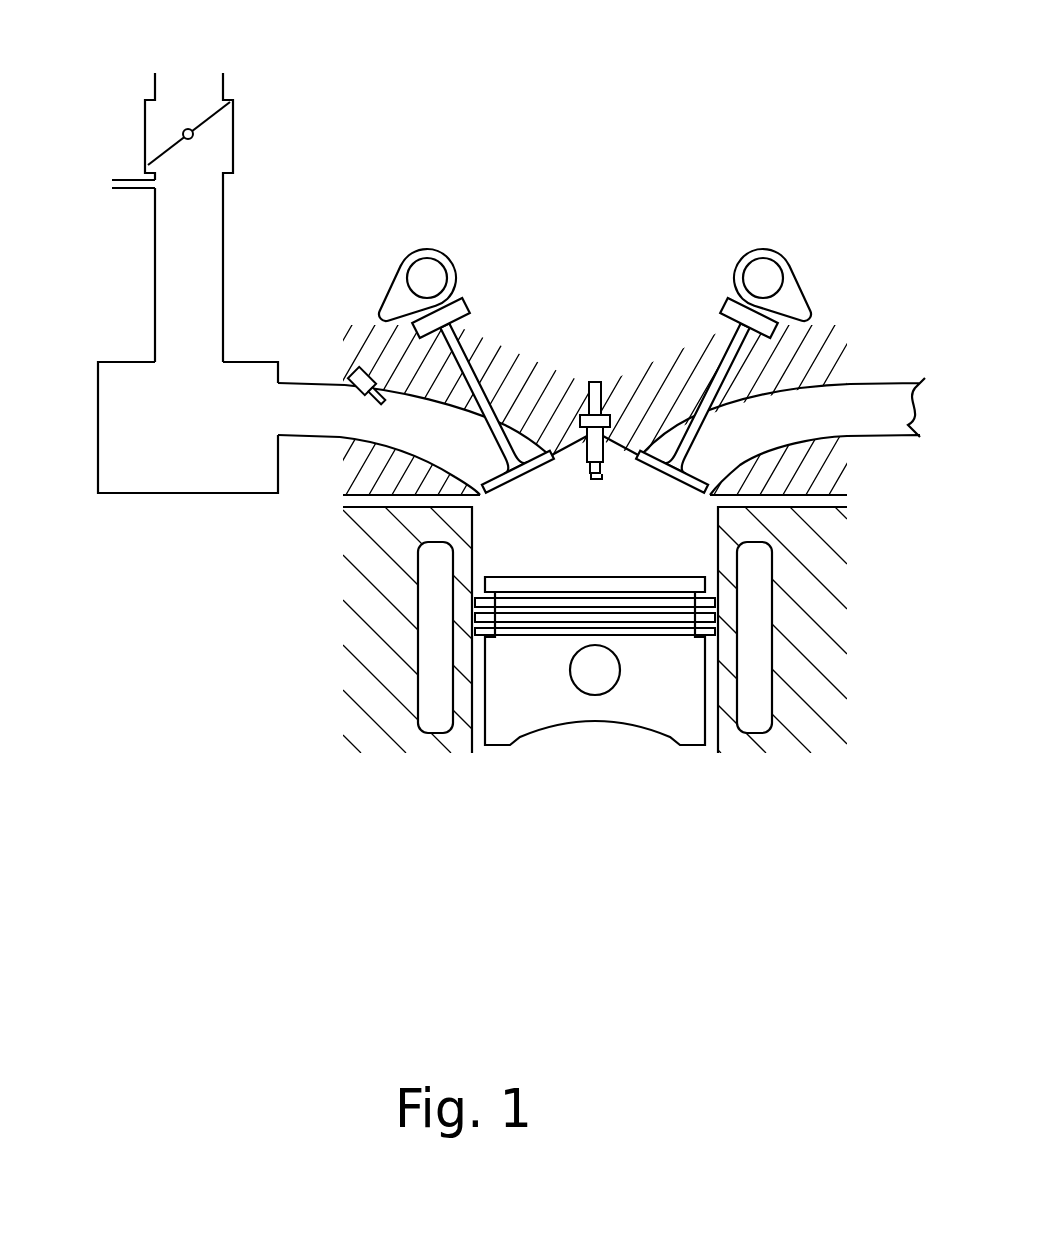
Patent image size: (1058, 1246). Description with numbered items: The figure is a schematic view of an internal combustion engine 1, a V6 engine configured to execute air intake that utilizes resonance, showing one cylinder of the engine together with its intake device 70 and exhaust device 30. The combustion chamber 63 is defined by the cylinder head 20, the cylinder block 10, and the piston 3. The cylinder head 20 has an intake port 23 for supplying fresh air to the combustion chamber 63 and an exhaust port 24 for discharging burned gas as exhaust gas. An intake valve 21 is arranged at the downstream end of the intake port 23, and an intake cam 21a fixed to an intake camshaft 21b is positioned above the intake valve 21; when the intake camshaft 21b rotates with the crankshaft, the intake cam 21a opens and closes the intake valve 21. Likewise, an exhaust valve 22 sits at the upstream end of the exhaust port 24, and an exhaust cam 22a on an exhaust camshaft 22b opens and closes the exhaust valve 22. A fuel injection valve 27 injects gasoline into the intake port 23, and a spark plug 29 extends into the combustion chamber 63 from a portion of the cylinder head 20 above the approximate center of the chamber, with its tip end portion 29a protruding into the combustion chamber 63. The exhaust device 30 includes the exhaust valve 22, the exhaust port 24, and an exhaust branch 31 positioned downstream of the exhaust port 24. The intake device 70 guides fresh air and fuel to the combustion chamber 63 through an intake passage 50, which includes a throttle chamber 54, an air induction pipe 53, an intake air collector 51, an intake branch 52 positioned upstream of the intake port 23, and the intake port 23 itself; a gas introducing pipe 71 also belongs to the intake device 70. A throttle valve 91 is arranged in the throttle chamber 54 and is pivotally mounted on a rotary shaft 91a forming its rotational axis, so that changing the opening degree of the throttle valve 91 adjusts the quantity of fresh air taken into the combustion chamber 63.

The internal combustion engine 1 is at (408, 848).
The piston 3 is at (662, 717).
The cylinder block 10 is at (357, 628).
The cylinder head 20 is at (367, 473).
The intake valve 21 is at (550, 470).
The intake cam 21a is at (392, 305).
The intake camshaft 21b is at (426, 276).
The exhaust valve 22 is at (640, 470).
The exhaust cam 22a is at (797, 300).
The exhaust camshaft 22b is at (766, 272).
The intake port 23 is at (427, 427).
The exhaust port 24 is at (778, 428).
The fuel injection valve 27 is at (357, 383).
The spark plug 29 is at (600, 386).
The tip end portion 29a is at (587, 486).
The exhaust device 30 is at (888, 560).
The exhaust branch 31 is at (860, 412).
The intake passage 50 is at (160, 606).
The intake air collector 51 is at (168, 482).
The intake branch 52 is at (300, 420).
The air induction pipe 53 is at (183, 249).
The throttle chamber 54 is at (155, 118).
The combustion chamber 63 is at (685, 566).
The intake device 70 is at (157, 740).
The gas introducing pipe 71 is at (100, 180).
The throttle valve 91 is at (220, 130).
The rotary shaft 91a is at (185, 127).